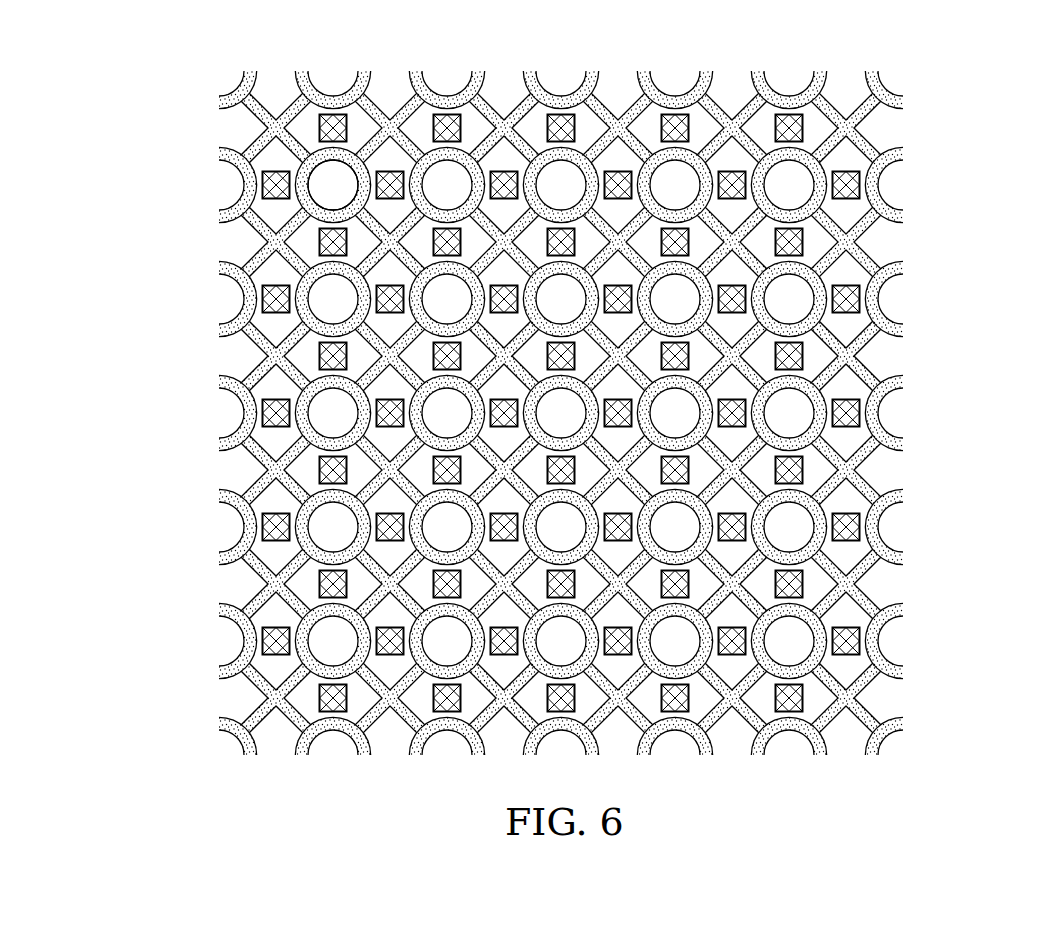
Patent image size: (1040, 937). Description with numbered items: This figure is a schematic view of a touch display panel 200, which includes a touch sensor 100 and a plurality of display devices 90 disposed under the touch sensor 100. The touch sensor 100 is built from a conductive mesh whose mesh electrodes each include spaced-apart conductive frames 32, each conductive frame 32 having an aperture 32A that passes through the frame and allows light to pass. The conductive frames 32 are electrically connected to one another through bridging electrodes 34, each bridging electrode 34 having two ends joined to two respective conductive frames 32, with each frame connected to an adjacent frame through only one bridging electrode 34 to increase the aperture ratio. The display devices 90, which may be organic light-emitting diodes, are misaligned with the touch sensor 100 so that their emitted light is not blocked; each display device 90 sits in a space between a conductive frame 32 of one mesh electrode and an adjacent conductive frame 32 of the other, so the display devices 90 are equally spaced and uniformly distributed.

The touch display panel 200 is at (1003, 35).
The touch sensor 100 is at (884, 243).
The conductive frame 32 is at (300, 184).
The aperture 32A is at (331, 170).
The display device 90 is at (262, 298).
The bridging electrode 34 is at (262, 465).